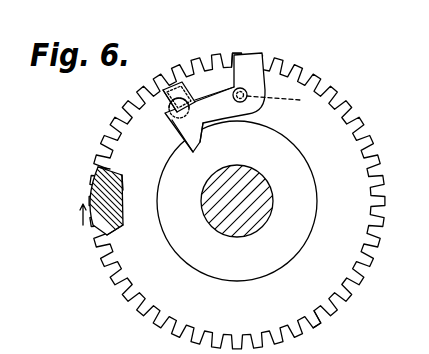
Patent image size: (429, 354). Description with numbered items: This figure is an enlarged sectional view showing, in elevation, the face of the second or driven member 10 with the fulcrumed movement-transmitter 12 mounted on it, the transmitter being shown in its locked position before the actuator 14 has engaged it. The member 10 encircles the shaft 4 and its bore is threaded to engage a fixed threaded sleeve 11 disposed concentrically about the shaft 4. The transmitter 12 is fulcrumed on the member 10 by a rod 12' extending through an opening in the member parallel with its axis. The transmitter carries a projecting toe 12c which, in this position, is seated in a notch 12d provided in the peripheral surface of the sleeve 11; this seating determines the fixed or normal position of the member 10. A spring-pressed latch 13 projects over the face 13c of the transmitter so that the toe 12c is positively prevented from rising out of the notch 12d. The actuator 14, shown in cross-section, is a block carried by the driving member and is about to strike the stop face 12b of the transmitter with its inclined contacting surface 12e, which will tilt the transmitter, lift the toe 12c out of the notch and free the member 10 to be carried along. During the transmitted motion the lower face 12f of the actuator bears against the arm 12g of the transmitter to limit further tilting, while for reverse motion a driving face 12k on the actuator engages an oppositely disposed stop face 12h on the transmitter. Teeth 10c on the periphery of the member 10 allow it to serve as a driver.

The shaft 4 is at (262, 183).
The second member 10 is at (237, 201).
The teeth 10c is at (328, 317).
The threaded sleeve 11 is at (307, 239).
The movement-transmitter 12 is at (238, 94).
The rod 12' is at (278, 107).
The stop face 12b is at (230, 60).
The toe 12c is at (196, 144).
The notch 12d is at (185, 152).
The contacting surface 12e is at (98, 163).
The lower face 12f is at (123, 185).
The arm 12g is at (219, 82).
The stop face 12h is at (235, 98).
The driving face 12k is at (118, 225).
The latch 13 is at (166, 90).
The face 13c is at (168, 103).
The actuator 14 is at (87, 196).